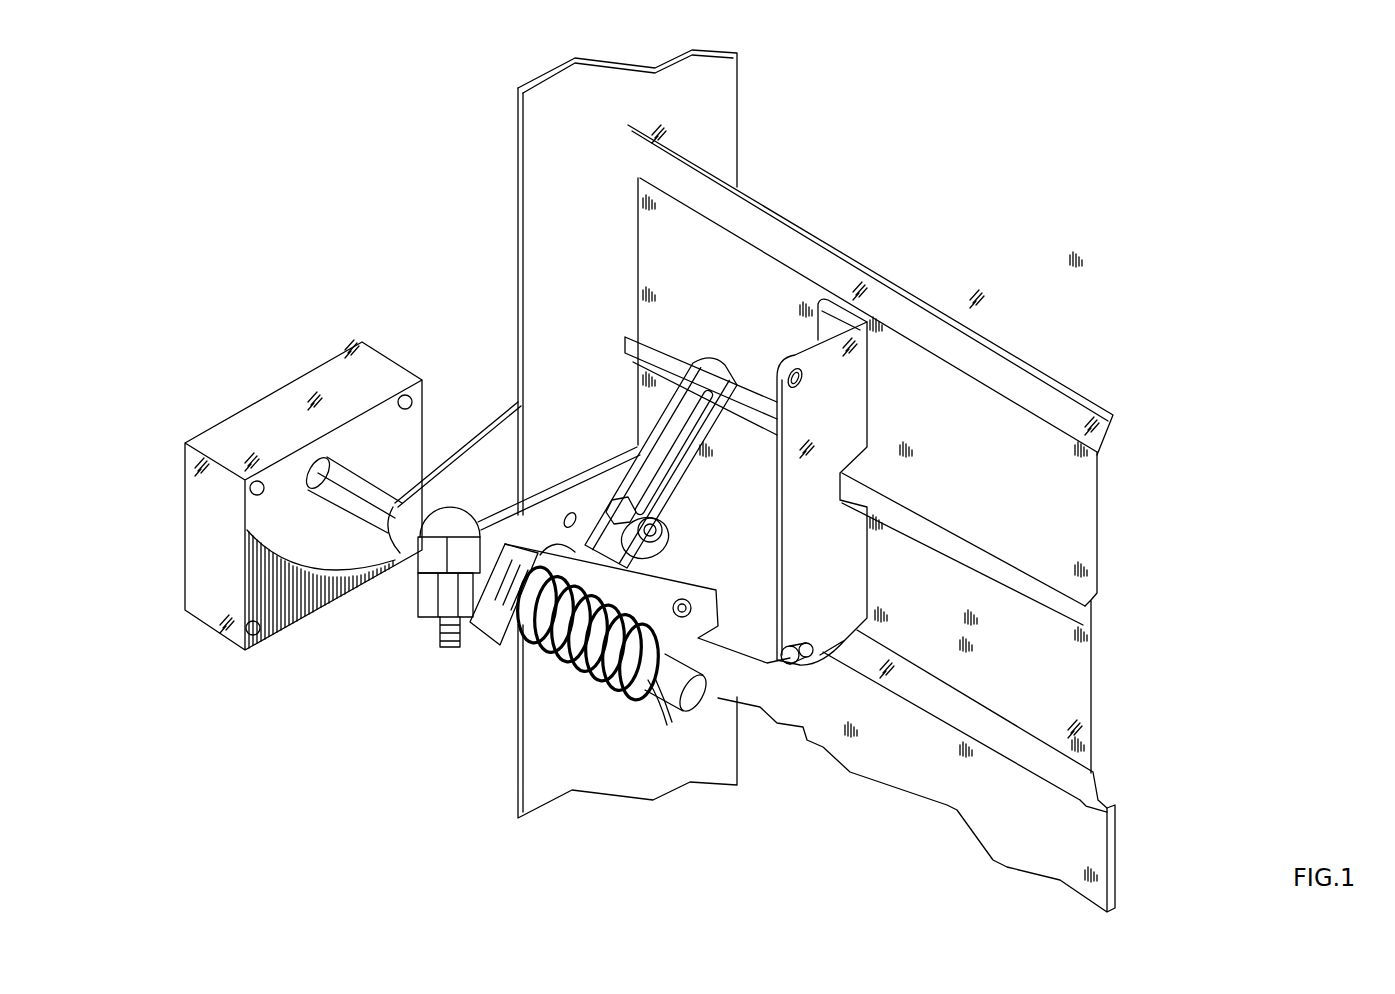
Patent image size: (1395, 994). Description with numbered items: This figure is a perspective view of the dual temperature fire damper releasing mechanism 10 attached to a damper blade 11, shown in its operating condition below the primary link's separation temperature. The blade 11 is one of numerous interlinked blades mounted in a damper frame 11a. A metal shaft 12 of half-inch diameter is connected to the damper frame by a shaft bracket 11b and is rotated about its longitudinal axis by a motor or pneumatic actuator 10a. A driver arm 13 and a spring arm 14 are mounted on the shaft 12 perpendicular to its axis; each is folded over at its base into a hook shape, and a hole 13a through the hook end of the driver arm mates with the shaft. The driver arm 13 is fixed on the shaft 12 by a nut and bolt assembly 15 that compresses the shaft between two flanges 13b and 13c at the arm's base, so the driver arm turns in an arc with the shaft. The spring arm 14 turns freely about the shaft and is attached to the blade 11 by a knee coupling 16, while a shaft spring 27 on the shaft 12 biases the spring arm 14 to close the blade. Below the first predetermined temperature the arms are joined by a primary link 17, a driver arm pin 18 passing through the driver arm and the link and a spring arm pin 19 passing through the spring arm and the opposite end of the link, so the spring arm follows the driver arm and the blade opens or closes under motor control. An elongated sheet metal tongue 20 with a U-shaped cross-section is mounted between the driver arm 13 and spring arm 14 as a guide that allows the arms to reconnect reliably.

The mechanism 10 is at (478, 401).
The motor or pneumatic actuator 10a is at (202, 530).
The damper blade 11 is at (637, 258).
The damper frame 11a is at (518, 142).
The shaft bracket 11b is at (518, 400).
The shaft 12 is at (405, 505).
The driver arm 13 is at (608, 462).
The hole 13a is at (480, 520).
The flange 13b is at (415, 560).
The flange 13c is at (440, 625).
The spring arm 14 is at (518, 660).
The nut and bolt assembly 15 is at (465, 625).
The knee coupling 16 is at (780, 660).
The primary link 17 is at (655, 520).
The driver arm pin 18 is at (662, 530).
The spring arm pin 19 is at (700, 615).
The tongue 20 is at (720, 365).
The shaft spring 27 is at (627, 700).